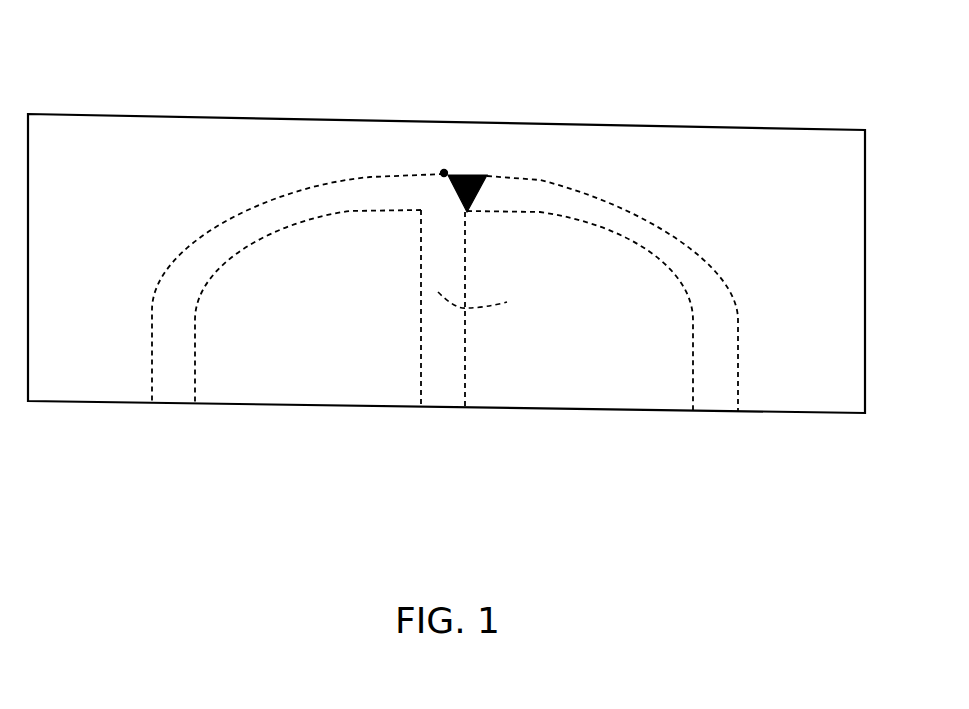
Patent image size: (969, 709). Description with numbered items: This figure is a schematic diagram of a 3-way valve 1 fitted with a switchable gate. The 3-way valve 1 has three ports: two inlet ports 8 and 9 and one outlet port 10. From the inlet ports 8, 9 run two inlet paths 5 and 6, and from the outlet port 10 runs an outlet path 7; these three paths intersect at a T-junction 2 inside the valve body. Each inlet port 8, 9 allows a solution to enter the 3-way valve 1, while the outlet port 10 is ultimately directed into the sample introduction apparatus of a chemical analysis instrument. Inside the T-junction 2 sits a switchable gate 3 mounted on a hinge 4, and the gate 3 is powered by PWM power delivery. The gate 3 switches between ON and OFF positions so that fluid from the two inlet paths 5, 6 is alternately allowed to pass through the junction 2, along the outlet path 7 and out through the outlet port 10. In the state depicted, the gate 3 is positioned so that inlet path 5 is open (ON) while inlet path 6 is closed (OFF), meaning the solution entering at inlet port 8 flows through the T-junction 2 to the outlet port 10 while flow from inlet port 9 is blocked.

The 3-way valve 1 is at (156, 96).
The T-junction 2 is at (433, 198).
The switchable gate 3 is at (493, 175).
The hinge 4 is at (450, 170).
The inlet path 5 is at (275, 213).
The inlet path 6 is at (645, 227).
The outlet path 7 is at (479, 301).
The inlet port 8 is at (172, 403).
The inlet port 9 is at (713, 412).
The outlet port 10 is at (437, 407).